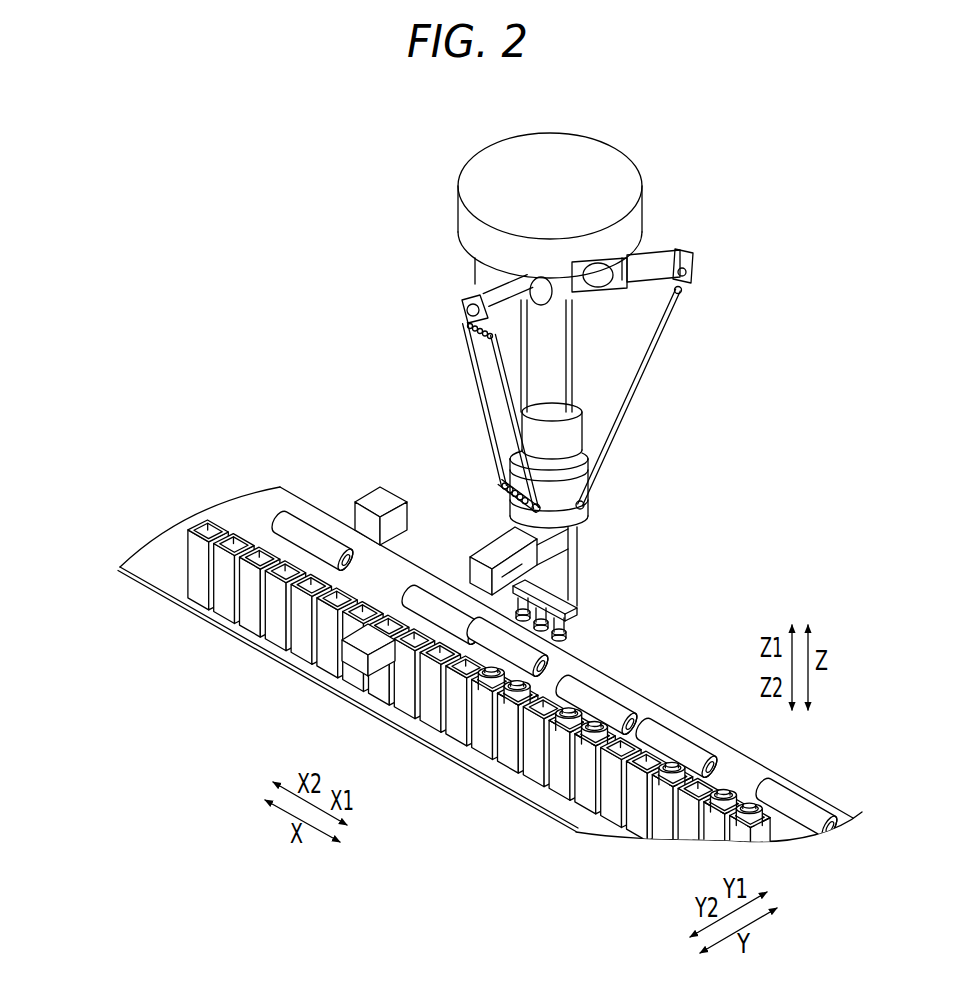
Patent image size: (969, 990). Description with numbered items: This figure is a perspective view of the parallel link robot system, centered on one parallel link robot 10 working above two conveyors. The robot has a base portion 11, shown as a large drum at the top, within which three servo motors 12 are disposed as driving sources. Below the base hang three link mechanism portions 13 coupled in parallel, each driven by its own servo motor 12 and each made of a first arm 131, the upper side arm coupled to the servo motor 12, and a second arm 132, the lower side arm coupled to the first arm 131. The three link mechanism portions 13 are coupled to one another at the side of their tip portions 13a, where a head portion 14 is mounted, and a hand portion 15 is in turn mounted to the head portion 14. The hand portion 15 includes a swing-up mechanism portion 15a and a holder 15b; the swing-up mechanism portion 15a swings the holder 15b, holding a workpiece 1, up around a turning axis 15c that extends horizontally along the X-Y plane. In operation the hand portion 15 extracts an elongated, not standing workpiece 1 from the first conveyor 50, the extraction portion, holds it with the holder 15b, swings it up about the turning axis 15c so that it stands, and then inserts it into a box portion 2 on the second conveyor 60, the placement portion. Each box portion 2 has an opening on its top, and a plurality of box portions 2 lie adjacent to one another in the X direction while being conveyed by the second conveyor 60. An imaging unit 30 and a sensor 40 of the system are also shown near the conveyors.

The workpiece 1 is at (310, 532).
The box portion 2 is at (195, 583).
The parallel link robot 10 is at (405, 257).
The base portion 11 is at (640, 224).
The servo motor 12 is at (483, 283).
The link mechanism portion 13 is at (704, 318).
The first arm 131 is at (664, 247).
The second arm 132 is at (651, 363).
The tip portion 13a is at (496, 491).
The head portion 14 is at (568, 424).
The hand portion 15 is at (603, 576).
The swing-up mechanism portion 15a is at (496, 531).
The holder 15b is at (589, 606).
The turning axis 15c is at (578, 531).
The imaging unit 30 is at (380, 500).
The sensor 40 is at (357, 653).
The first conveyor 50 is at (285, 502).
The second conveyor 60 is at (177, 590).